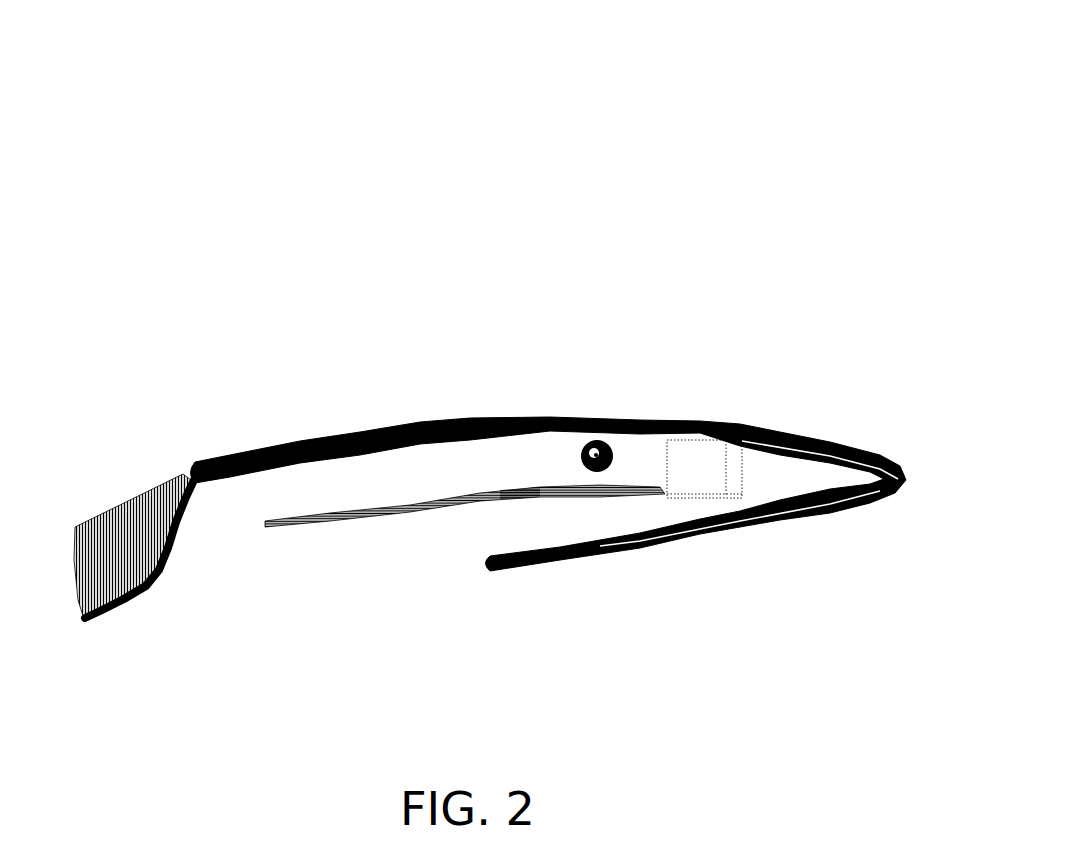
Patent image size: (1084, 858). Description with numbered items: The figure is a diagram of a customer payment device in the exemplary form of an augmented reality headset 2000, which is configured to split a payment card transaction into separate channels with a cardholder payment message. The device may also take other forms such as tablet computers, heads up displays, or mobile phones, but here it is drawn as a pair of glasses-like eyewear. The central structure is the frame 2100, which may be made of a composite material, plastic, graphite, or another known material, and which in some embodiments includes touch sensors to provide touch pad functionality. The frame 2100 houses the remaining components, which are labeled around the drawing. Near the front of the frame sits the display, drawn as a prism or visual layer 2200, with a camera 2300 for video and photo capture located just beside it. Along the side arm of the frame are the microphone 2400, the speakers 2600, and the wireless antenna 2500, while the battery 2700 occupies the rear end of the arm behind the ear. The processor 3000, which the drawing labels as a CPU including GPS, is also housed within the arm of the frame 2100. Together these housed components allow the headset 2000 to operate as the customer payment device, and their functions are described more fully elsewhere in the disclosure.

The augmented reality headset 2000 is at (498, 333).
The frame 2100 is at (828, 443).
The display (prism, visual layer) 2200 is at (685, 480).
The camera 2300 is at (605, 438).
The microphone 2400 is at (517, 502).
The wireless antenna 2500 is at (441, 462).
The speakers 2600 is at (280, 530).
The battery 2700 is at (112, 515).
The processor 3000 is at (358, 492).